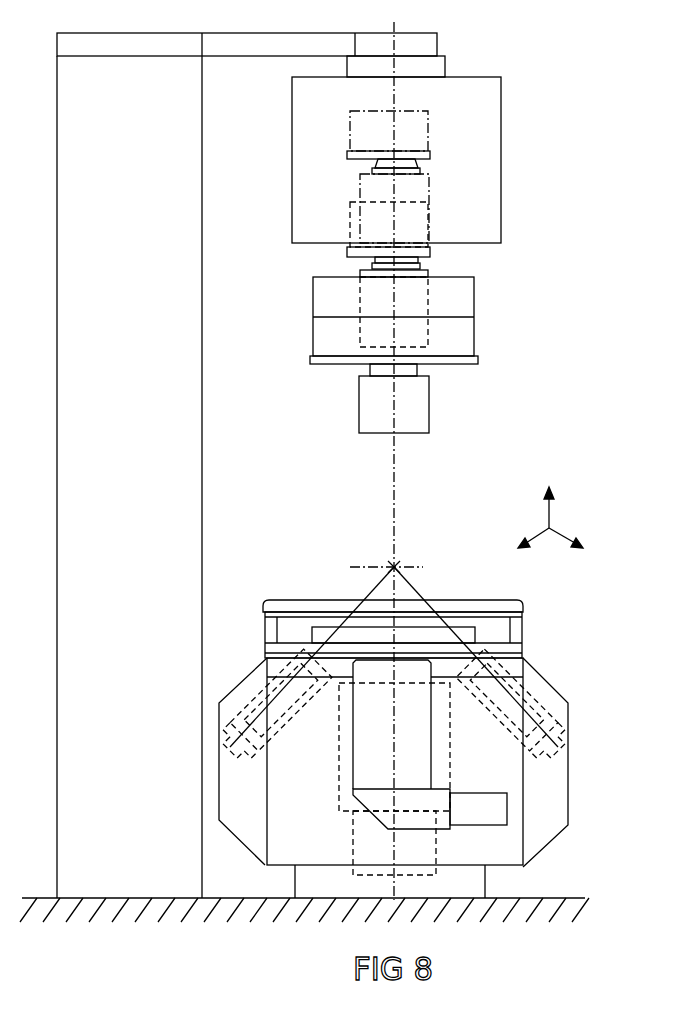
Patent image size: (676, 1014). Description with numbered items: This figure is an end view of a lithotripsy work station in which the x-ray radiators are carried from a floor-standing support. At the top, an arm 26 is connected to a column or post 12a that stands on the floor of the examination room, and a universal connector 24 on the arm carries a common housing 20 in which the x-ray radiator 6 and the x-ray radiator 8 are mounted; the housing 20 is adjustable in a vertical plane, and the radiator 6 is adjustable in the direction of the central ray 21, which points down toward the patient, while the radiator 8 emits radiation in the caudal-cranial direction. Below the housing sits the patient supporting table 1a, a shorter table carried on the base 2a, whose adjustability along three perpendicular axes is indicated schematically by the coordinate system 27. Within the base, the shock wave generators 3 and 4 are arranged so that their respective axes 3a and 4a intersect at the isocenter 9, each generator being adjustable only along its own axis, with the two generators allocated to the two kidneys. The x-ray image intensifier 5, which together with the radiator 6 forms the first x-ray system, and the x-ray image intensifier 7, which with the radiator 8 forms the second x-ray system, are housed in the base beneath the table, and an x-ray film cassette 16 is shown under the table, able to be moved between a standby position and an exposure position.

The patient supporting table 1a is at (287, 602).
The base 2a is at (233, 793).
The shock wave generator 3 is at (545, 690).
The axis of shock wave generator 3a is at (432, 596).
The shock wave generator 4 is at (240, 690).
The axis of shock wave generator 4a is at (357, 601).
The x-ray image intensifier 5 is at (370, 745).
The x-ray radiator 6 is at (419, 224).
The x-ray image intensifier 7 is at (353, 789).
The x-ray radiator 8 is at (470, 342).
The isocenter 9 is at (397, 565).
The column or post 12a is at (77, 335).
The x-ray film cassette 16 is at (312, 631).
The common housing 20 is at (292, 184).
The central ray 21 is at (392, 468).
The universal connector 24 is at (444, 64).
The arm 26 is at (287, 40).
The coordinate system 27 is at (553, 515).